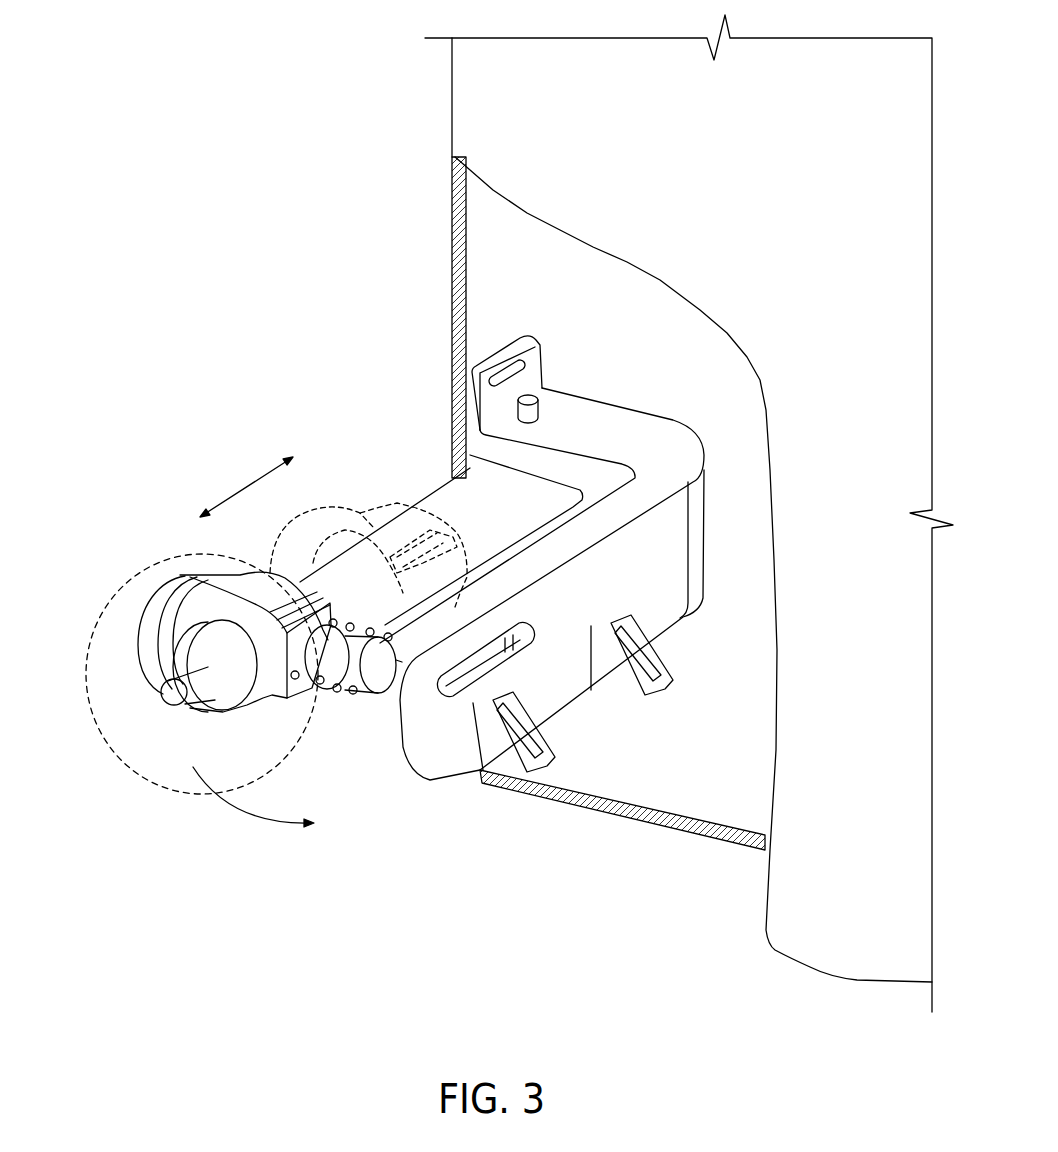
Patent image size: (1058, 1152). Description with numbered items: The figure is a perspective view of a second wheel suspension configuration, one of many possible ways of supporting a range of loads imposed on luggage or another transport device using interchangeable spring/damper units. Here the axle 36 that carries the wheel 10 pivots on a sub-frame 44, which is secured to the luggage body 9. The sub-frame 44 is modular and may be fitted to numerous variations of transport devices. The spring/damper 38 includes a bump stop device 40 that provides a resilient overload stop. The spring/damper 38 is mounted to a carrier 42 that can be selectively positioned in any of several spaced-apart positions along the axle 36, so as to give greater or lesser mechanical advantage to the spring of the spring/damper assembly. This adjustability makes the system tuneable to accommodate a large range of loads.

The luggage body 9 is at (452, 80).
The wheel 10 is at (128, 767).
The axle 36 is at (165, 680).
The spring/damper 38 is at (310, 695).
The bump stop device 40 is at (342, 695).
The carrier 42 is at (258, 574).
The sub-frame 44 is at (665, 617).